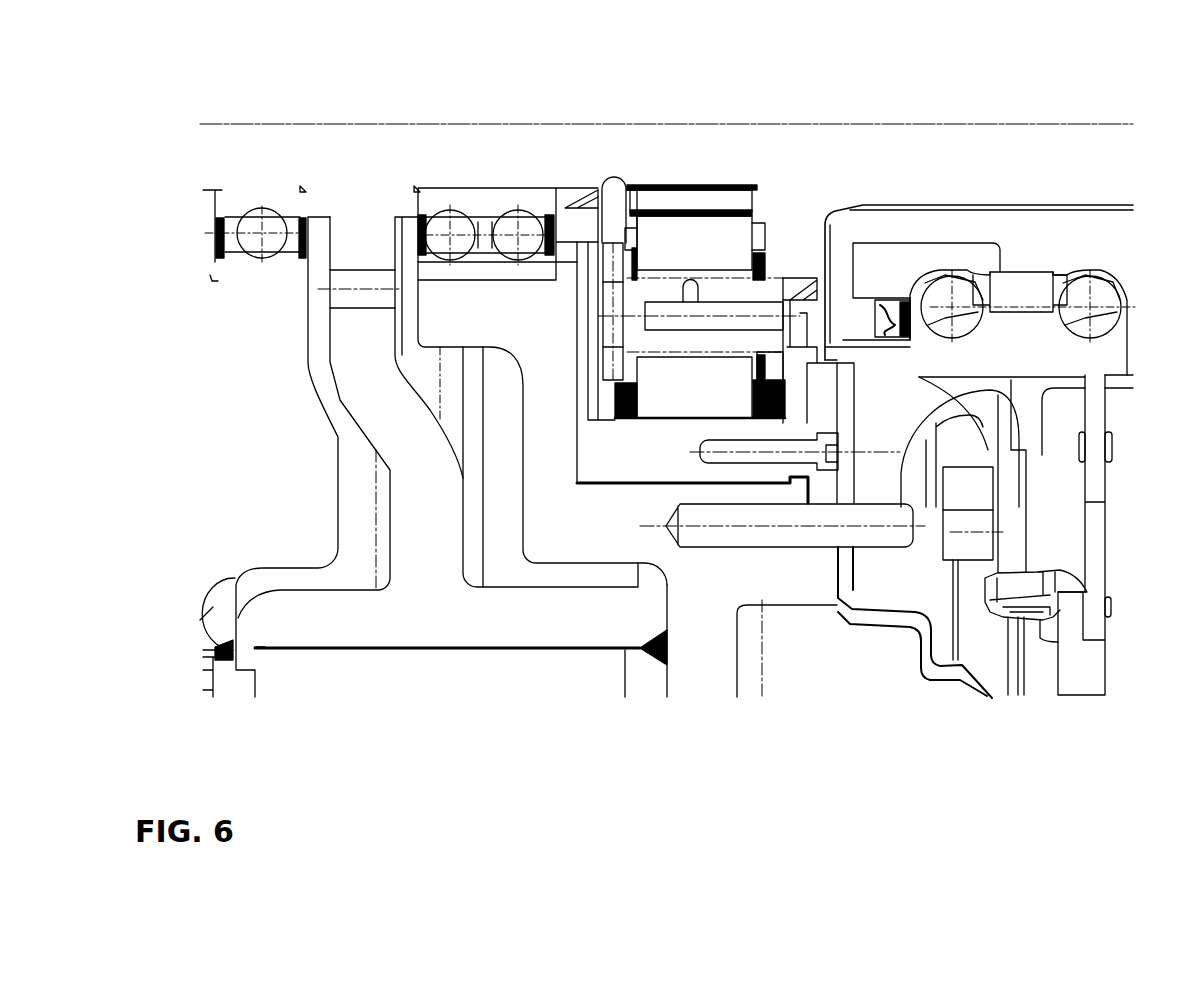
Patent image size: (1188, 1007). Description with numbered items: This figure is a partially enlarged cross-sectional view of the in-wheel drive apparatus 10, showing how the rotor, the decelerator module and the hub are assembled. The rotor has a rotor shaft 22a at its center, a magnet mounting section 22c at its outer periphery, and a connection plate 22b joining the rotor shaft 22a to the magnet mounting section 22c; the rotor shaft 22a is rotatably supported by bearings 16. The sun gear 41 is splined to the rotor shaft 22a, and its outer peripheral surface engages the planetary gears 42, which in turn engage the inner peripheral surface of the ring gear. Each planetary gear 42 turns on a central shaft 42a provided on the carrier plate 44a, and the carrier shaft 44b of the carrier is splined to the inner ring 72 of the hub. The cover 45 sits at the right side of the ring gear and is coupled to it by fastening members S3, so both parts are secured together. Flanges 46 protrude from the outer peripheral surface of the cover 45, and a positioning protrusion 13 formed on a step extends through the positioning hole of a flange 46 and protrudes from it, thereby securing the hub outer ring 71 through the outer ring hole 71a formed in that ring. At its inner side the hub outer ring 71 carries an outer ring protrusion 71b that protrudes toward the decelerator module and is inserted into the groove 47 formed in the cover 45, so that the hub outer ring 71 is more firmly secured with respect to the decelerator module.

The housing 10 is at (623, 457).
The positioning protrusion 13 is at (716, 545).
The bearings 16 is at (442, 222).
The rotor shaft 22a is at (590, 147).
The connection plate 22b is at (423, 483).
The magnet mounting section 22c is at (537, 620).
The sun gear 41 is at (675, 187).
The planetary gears 42 is at (720, 233).
The central shaft 42a is at (660, 310).
The carrier plate 44a is at (790, 370).
The carrier shaft 44b is at (843, 147).
The cover 45 is at (828, 477).
The flanges 46 is at (837, 348).
The groove 47 is at (822, 352).
The hub outer ring 71 is at (1058, 610).
The outer ring hole 71a is at (930, 660).
The outer ring protrusion 71b is at (960, 602).
The inner ring 72 is at (955, 228).
The fastening members S3 is at (823, 412).